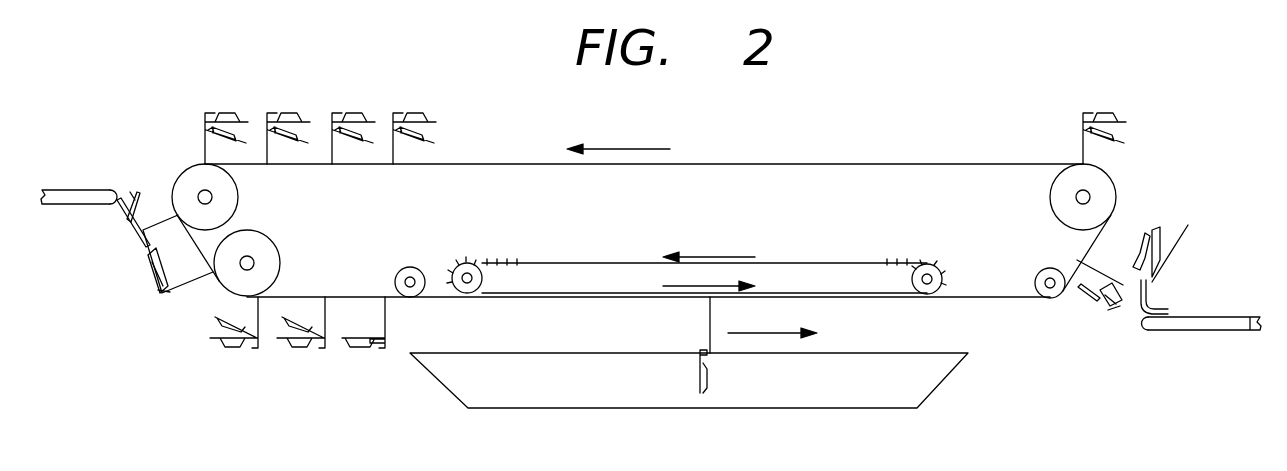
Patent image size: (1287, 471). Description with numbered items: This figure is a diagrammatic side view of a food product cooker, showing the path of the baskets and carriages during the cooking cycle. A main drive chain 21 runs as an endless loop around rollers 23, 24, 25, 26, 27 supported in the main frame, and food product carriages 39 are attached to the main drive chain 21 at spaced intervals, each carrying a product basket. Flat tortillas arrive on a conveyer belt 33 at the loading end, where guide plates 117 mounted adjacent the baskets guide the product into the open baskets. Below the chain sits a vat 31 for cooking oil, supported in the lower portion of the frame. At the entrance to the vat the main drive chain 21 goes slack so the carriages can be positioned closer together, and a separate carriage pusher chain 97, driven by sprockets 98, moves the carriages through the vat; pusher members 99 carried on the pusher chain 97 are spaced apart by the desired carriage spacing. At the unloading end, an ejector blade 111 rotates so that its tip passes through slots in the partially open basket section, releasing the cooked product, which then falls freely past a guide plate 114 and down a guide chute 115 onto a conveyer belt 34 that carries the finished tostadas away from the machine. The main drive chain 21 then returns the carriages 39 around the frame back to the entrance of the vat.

The main drive chain 21 is at (807, 164).
The roller 23 is at (238, 197).
The roller 24 is at (278, 252).
The roller 25 is at (410, 267).
The roller 26 is at (1035, 282).
The roller 27 is at (1052, 197).
The vat 31 is at (689, 369).
The conveyer belt 33 is at (77, 190).
The conveyer belt 34 is at (1233, 317).
The food product carriages 39 is at (393, 158).
The carriage pusher chain 97 is at (800, 264).
The sprockets 98 is at (482, 279).
The pusher members 99 is at (922, 264).
The ejector blade 111 is at (1082, 298).
The guide plate 114 is at (1177, 250).
The guide chute 115 is at (1142, 300).
The guide plates 117 is at (137, 238).